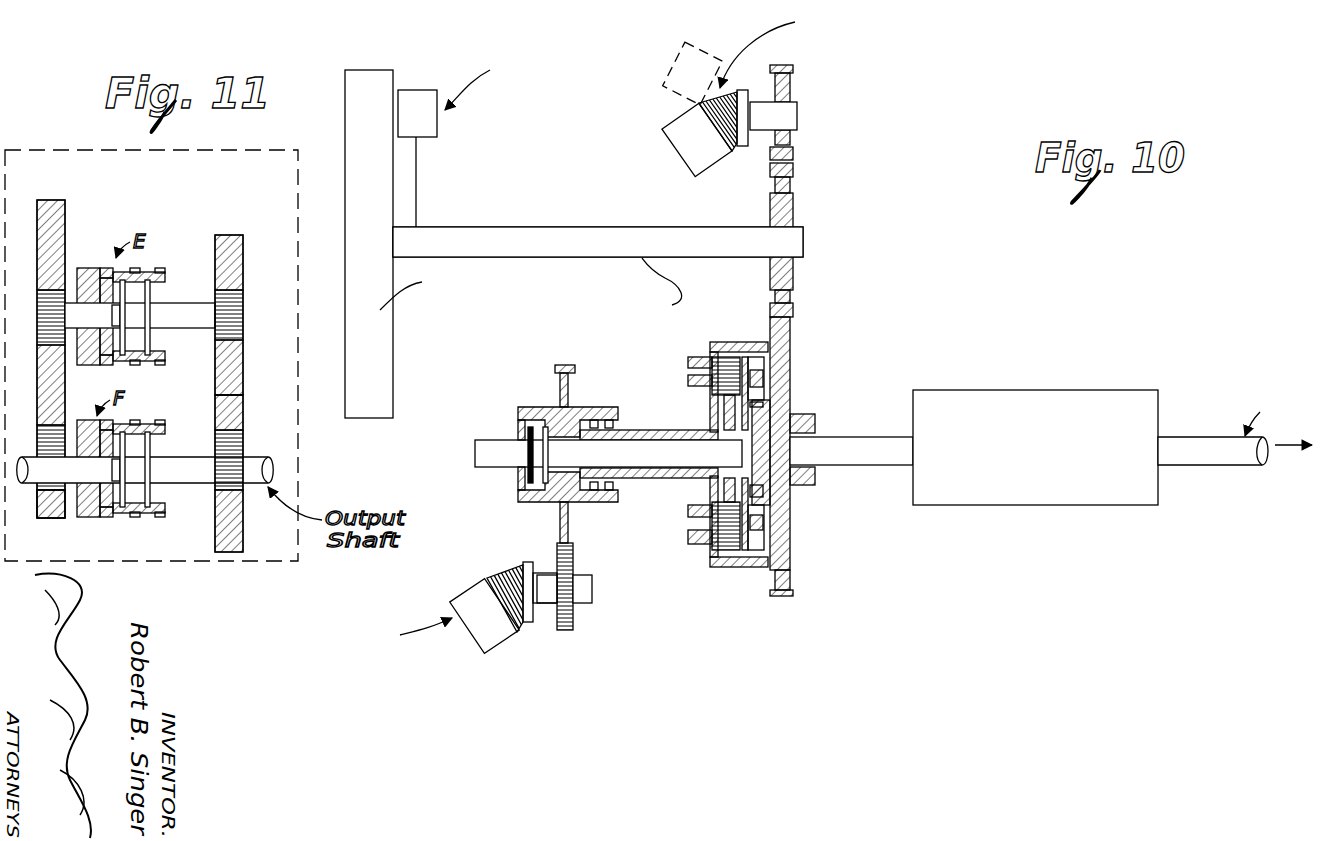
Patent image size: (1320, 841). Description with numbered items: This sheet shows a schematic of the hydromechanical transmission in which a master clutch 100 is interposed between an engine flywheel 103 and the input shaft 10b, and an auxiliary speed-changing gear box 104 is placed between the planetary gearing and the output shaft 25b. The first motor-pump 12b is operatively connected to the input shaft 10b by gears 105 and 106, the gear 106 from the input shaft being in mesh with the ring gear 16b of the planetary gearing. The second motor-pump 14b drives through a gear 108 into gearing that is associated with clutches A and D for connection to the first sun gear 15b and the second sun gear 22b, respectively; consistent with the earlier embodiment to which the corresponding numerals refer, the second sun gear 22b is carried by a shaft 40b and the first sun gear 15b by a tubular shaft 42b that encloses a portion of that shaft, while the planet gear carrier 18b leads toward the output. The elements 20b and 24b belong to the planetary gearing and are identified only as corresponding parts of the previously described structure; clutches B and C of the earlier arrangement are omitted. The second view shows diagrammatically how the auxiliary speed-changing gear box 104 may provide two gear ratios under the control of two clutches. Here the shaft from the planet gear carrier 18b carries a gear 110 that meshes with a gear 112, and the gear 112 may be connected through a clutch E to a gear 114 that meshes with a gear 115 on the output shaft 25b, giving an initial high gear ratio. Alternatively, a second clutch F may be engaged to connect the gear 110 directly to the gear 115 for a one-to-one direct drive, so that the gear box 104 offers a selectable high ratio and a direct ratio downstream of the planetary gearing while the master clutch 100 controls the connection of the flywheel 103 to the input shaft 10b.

In FIG. 10, the master clutch 100 is at (430, 128).
In FIG. 10, the engine flywheel 103 is at (375, 205).
In FIG. 10, the input shaft 10b is at (597, 215).
In FIG. 10, the first motor-pump 12b is at (682, 132).
In FIG. 10, the second motor-pump 14b is at (488, 627).
In FIG. 10, the gear 105 is at (790, 156).
In FIG. 10, the gear 106 is at (785, 212).
In FIG. 10, the gear 108 is at (570, 632).
In FIG. 10, the first sun gear 15b is at (735, 400).
In FIG. 10, the ring gear 16b is at (780, 355).
In FIG. 10, the planet gear carrier 18b is at (792, 488).
In FIG. 10, the clutch plate 20b is at (738, 357).
In FIG. 10, the second sun gear 22b is at (762, 425).
In FIG. 10, the gear 24b is at (700, 372).
In FIG. 11, the output shaft 25b is at (258, 462).
In FIG. 10, the output shaft 25b is at (1240, 458).
In FIG. 10, the intermediate shaft 40b is at (608, 454).
In FIG. 10, the clutch housing 42b is at (705, 468).
In FIG. 10, the auxiliary speed-changing gear box 104 is at (1068, 390).
In FIG. 11, the gear 110 is at (52, 505).
In FIG. 11, the gear 112 is at (54, 234).
In FIG. 11, the gear 114 is at (229, 278).
In FIG. 11, the gear 115 is at (230, 418).